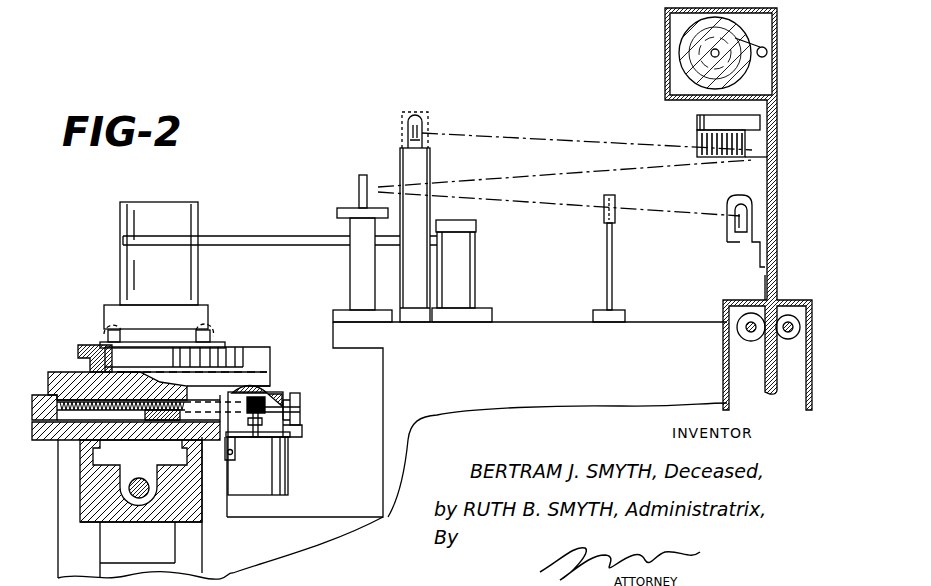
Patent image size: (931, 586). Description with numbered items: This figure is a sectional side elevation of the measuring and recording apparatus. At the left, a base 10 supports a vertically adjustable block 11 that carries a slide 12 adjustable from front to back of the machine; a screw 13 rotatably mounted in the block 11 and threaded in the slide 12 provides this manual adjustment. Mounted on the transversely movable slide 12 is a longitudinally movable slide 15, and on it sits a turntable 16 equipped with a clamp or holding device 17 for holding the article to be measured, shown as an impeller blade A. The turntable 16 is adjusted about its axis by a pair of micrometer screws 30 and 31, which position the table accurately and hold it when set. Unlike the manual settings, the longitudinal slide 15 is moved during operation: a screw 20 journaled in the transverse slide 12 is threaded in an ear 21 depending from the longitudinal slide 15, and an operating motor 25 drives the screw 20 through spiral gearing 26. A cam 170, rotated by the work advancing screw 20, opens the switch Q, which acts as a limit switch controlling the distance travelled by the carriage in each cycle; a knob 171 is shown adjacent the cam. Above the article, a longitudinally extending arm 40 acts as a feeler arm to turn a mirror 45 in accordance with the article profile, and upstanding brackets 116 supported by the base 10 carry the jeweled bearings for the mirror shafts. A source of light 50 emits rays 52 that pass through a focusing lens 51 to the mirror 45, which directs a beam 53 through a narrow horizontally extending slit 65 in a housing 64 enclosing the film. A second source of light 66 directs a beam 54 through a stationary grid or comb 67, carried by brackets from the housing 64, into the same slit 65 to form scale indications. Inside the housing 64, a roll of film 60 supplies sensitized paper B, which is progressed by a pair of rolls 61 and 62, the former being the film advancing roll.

The base 10 is at (392, 450).
The vertically adjustable block 11 is at (115, 533).
The slide 12 is at (92, 440).
The screw 13 is at (128, 488).
The longitudinally movable slide 15 is at (262, 362).
The turntable 16 is at (95, 345).
The clamp or holding device 17 is at (198, 320).
The screw 20 is at (70, 398).
The ear 21 is at (172, 398).
The operating motor 25 is at (285, 470).
The spiral gearing 26 is at (280, 396).
The micrometer screw 30 is at (105, 325).
The micrometer screw 31 is at (212, 334).
The longitudinally extending arm 40 is at (284, 240).
The mirror 45 is at (358, 188).
The source of light 50 is at (736, 220).
The focusing lens 51 is at (616, 198).
The rays 52 is at (524, 204).
The beam 53 is at (560, 172).
The beam 54 is at (524, 130).
The roll of film 60 is at (690, 47).
The roll 61 is at (758, 340).
The roll 62 is at (790, 339).
The housing 64 is at (764, 283).
The slit 65 is at (767, 158).
The second source of light 66 is at (416, 123).
The grid or comb 67 is at (697, 133).
The upstanding bracket 116 is at (358, 280).
The cam 170 is at (302, 411).
The knob 171 is at (302, 398).
The impeller blade A is at (190, 222).
The film B is at (738, 209).
The switch Q is at (304, 434).